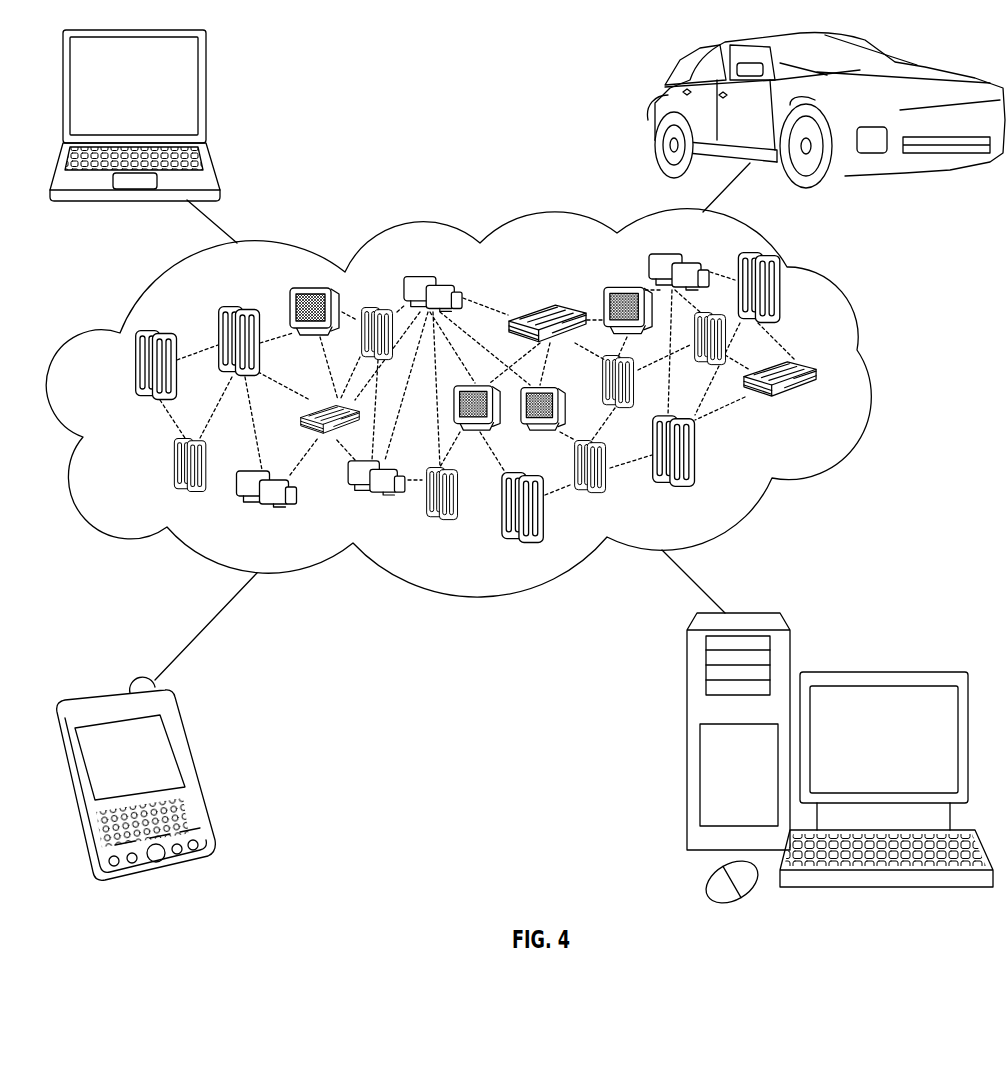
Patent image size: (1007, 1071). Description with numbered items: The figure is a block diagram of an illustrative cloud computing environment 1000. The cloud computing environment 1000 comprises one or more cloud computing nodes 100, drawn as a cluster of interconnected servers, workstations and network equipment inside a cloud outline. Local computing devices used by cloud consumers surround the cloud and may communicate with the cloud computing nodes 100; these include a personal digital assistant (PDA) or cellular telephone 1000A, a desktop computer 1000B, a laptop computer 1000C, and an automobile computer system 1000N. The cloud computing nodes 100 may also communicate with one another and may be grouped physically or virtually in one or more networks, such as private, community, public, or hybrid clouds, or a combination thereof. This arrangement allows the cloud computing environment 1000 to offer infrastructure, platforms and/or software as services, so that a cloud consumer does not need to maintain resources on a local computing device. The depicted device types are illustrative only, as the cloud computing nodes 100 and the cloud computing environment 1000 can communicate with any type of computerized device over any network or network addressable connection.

The cloud computing nodes 100 is at (822, 408).
The cloud computing environment 1000 is at (884, 377).
The personal digital assistant (PDA) or cellular telephone 1000A is at (197, 769).
The desktop computer 1000B is at (880, 672).
The laptop computer 1000C is at (208, 95).
The automobile computer system 1000N is at (653, 113).